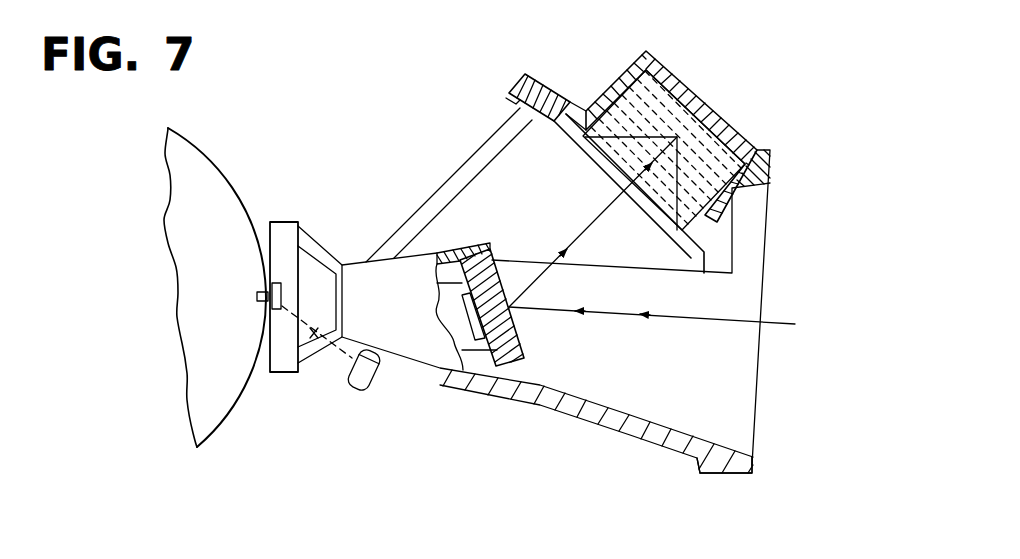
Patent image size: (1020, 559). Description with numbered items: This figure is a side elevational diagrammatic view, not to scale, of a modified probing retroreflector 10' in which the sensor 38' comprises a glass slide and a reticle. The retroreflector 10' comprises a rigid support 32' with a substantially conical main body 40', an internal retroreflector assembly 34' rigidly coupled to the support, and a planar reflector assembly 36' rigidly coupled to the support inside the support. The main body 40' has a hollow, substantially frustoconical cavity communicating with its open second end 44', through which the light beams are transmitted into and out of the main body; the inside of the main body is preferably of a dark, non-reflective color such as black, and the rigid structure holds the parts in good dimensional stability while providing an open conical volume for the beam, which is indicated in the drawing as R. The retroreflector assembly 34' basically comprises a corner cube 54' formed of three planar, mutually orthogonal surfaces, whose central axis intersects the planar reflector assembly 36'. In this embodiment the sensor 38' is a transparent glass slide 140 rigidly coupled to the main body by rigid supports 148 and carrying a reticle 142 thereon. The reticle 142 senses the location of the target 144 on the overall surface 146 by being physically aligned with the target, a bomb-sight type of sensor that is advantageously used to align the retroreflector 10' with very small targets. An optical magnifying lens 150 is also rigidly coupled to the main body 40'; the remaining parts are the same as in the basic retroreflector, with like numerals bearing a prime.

The overall surface 146 is at (232, 170).
The target 144 is at (248, 301).
The reticle 142 is at (282, 268).
The transparent glass slide 140 is at (304, 217).
The rigid supports 148 is at (326, 251).
The sensor or probe 38' is at (428, 180).
The optical magnifying lens 150 is at (366, 393).
The second end 44' is at (601, 307).
The planar reflector assembly 36' is at (480, 350).
The main body 40' is at (547, 405).
The rigid support 32' is at (682, 472).
The internal retroreflector assembly 34' is at (547, 64).
The modified probing retroreflector 10' is at (671, 143).
The corner cube 54' is at (703, 150).
The light ray R is at (778, 320).